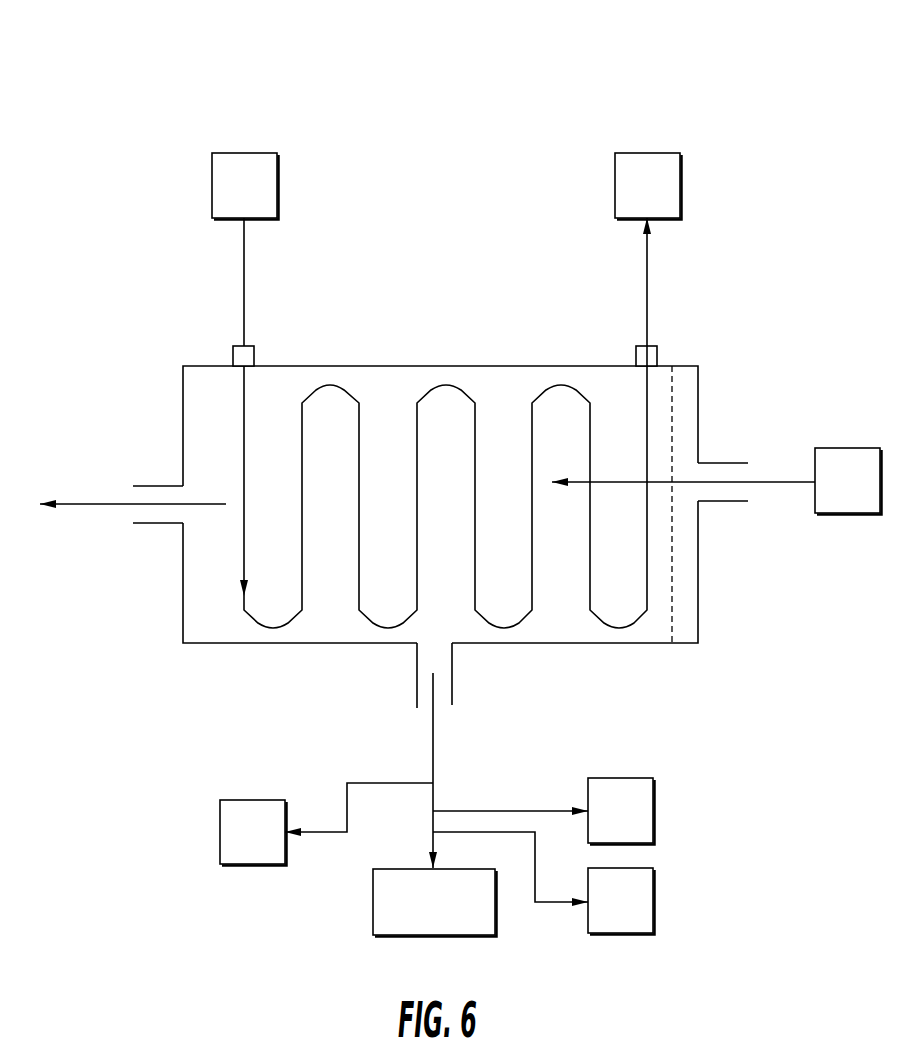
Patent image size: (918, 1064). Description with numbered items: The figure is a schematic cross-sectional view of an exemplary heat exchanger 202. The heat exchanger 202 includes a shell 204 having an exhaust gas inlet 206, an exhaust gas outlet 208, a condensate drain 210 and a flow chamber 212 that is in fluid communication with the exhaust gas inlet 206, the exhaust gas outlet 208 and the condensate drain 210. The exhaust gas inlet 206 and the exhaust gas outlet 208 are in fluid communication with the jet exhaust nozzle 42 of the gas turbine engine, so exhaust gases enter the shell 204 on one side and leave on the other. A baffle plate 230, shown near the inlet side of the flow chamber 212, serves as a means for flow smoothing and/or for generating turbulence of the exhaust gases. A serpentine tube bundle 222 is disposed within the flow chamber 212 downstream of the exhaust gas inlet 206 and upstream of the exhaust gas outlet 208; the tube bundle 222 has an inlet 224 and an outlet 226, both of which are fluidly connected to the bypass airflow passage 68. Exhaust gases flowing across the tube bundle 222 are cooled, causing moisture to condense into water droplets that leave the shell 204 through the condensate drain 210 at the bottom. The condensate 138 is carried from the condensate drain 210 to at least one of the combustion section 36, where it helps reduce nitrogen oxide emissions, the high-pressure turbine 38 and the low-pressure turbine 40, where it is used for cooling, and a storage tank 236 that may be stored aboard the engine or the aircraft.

The heat exchanger 202 is at (733, 72).
The bypass airflow passage 68 is at (231, 199).
The inlet 224 is at (233, 356).
The outlet 226 is at (657, 356).
The tube bundle 222 is at (366, 417).
The baffle plate 230 is at (672, 423).
The jet exhaust nozzle 42 is at (834, 494).
The exhaust gas outlet 208 is at (142, 512).
The exhaust gas inlet 206 is at (748, 489).
The flow chamber 212 is at (329, 613).
The shell 204 is at (590, 643).
The condensate 138 is at (433, 760).
The condensate drain 210 is at (442, 705).
The high-pressure turbine 38 is at (239, 845).
The combustion section 36 is at (607, 824).
The low-pressure turbine 40 is at (607, 914).
The storage tank 236 is at (415, 915).